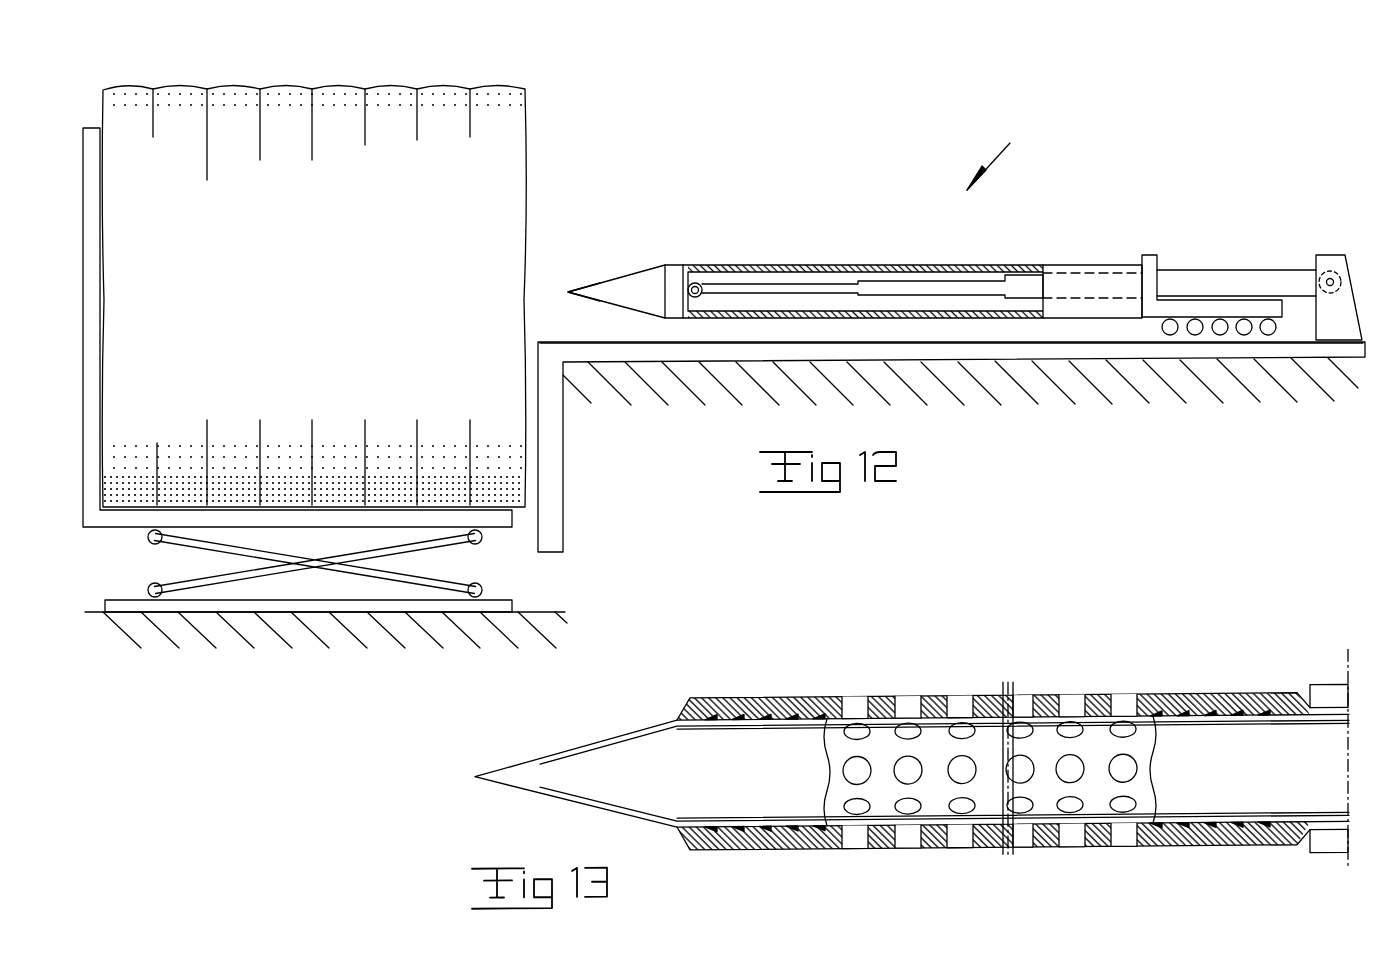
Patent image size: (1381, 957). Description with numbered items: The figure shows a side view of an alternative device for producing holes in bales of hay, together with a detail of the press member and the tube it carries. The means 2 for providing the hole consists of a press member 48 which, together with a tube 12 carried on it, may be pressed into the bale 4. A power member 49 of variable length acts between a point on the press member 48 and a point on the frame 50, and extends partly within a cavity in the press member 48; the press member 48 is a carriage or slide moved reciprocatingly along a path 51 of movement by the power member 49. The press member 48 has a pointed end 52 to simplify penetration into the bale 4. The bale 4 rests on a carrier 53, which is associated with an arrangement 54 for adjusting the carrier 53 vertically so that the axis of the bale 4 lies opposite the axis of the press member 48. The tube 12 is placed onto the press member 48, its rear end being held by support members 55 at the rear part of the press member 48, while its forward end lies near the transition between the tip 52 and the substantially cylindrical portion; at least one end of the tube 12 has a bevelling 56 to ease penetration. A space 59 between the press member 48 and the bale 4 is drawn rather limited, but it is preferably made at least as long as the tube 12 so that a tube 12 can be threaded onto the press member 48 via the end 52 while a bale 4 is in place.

In FIG. 12, the means for providing the hole 2 is at (998, 154).
In FIG. 12, the bale 4 is at (503, 157).
In FIG. 13, the tube 12 is at (935, 700).
In FIG. 12, the press member 48 is at (806, 262).
In FIG. 13, the press member 48 is at (765, 755).
In FIG. 12, the power member 49 is at (1207, 288).
In FIG. 12, the frame 50 is at (1127, 345).
In FIG. 12, the path of movement 51 is at (780, 341).
In FIG. 12, the pointed end 52 is at (632, 288).
In FIG. 12, the carrier 53 is at (114, 520).
In FIG. 12, the arrangement to adjust the position of the carrier vertically 54 is at (343, 567).
In FIG. 13, the support members 55 is at (1326, 702).
In FIG. 13, the bevelling 56 is at (686, 716).
In FIG. 12, the space 59 is at (544, 292).